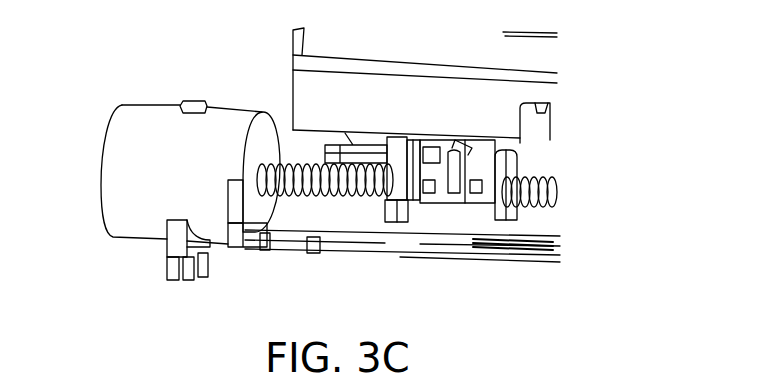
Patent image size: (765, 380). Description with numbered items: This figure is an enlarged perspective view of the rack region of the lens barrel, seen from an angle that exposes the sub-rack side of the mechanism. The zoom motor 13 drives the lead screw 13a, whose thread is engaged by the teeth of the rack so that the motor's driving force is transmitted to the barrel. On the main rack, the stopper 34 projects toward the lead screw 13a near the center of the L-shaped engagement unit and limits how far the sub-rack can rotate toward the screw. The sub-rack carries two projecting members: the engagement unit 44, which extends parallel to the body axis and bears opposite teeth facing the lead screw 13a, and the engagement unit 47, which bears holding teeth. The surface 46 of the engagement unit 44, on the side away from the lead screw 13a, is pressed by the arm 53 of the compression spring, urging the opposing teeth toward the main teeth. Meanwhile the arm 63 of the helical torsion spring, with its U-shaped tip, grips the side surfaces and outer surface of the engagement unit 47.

The zoom motor 13 is at (125, 203).
The lead screw 13a is at (556, 183).
The stopper 34 is at (525, 160).
The engagement unit 44 is at (517, 217).
The surface 46 is at (427, 203).
The engagement unit 47 is at (430, 200).
The arm 53 is at (440, 203).
The arm 63 is at (393, 200).